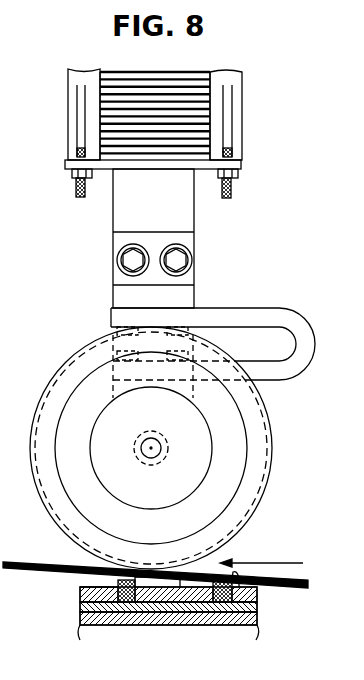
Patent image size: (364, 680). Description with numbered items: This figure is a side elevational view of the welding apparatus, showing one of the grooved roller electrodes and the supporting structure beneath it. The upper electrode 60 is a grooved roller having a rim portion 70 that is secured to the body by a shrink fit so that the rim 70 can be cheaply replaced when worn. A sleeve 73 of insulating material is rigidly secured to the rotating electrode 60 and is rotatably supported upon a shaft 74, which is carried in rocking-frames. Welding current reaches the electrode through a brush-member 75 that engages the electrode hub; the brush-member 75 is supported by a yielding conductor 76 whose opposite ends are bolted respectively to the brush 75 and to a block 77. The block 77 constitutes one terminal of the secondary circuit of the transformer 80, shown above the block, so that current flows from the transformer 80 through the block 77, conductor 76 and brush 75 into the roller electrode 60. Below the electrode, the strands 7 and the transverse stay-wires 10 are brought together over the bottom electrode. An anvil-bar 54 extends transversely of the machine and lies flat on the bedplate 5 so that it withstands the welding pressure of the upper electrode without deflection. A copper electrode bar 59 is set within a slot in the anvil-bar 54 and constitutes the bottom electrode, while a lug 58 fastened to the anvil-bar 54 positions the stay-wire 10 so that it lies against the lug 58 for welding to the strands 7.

The transformer 80 is at (157, 63).
The block 77 is at (188, 278).
The yielding conductor 76 is at (270, 313).
The brush-member 75 is at (113, 388).
The shaft 74 is at (147, 450).
The sleeve 73 is at (140, 459).
The upper electrode 60 is at (273, 447).
The rim portion 70 is at (250, 488).
The strand 7 is at (25, 563).
The stay-wire 10 is at (120, 580).
The electrode bar 59 is at (123, 603).
The lug 58 is at (147, 584).
The anvil-bar 54 is at (177, 603).
The bedplate 5 is at (222, 615).